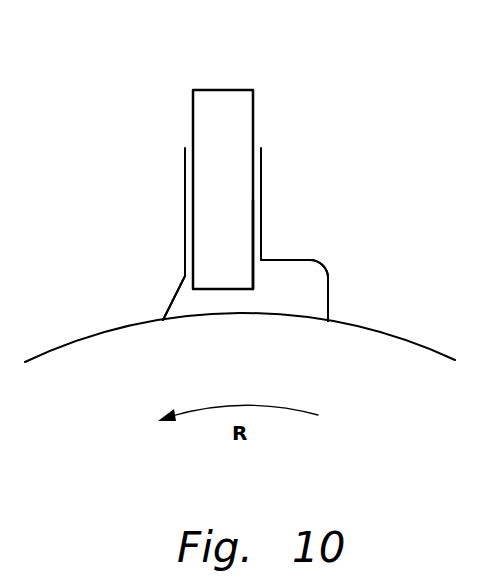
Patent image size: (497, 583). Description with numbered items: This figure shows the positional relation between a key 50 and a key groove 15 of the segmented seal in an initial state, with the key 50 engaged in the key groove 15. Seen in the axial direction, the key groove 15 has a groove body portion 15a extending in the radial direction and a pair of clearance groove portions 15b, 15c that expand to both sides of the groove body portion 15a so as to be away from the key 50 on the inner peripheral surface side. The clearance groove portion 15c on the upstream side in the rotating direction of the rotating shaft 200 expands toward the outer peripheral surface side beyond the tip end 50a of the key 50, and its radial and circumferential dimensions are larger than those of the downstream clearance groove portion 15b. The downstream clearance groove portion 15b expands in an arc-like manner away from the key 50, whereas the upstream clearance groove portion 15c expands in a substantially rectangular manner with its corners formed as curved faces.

The key 50 is at (232, 100).
The tip end 50a is at (218, 289).
The key groove 15 is at (249, 320).
The groove body portion 15a is at (186, 182).
The clearance groove portion 15b is at (166, 305).
The clearance groove portion 15c is at (318, 282).
The rotating shaft 200 is at (240, 347).